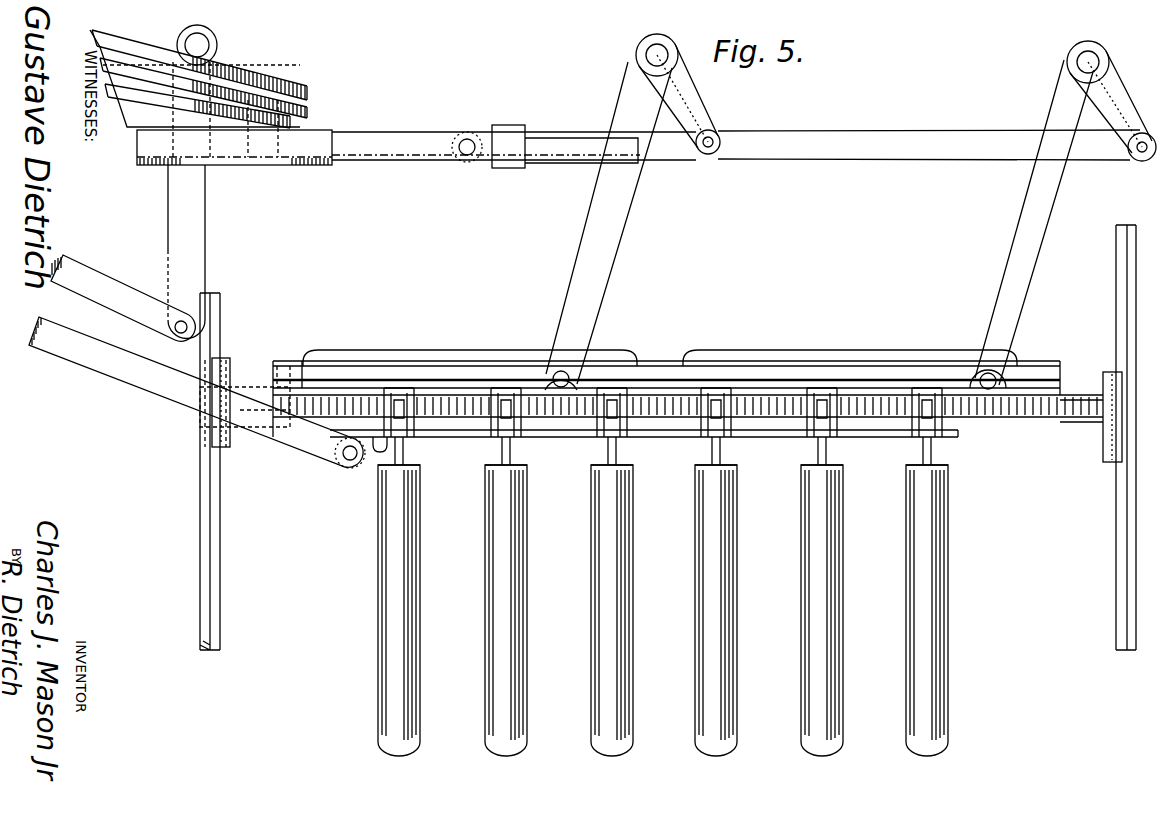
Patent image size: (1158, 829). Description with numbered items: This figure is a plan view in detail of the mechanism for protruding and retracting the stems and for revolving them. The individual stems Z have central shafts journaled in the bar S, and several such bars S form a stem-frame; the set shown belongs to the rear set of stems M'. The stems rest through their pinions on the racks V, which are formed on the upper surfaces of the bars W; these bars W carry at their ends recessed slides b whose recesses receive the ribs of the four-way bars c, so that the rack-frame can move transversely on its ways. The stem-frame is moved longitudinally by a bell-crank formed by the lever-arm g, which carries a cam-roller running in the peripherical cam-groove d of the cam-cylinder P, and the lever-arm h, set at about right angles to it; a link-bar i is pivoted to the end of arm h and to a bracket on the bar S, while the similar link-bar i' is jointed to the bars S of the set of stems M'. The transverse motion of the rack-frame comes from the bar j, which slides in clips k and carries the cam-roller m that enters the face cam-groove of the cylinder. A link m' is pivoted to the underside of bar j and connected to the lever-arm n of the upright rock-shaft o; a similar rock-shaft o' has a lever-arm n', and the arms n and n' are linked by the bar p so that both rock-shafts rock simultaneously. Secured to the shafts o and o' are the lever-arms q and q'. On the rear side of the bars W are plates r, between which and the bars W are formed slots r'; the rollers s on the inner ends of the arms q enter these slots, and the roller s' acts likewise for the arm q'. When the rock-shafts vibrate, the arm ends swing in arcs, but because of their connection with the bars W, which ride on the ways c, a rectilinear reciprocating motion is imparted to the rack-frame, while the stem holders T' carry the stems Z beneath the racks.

The lever-arm g is at (198, 65).
The cam-cylinder P is at (203, 82).
The peripherical cam-groove d is at (302, 102).
The cam-roller m is at (217, 113).
The clips k is at (331, 159).
The bar j is at (514, 147).
The upright rock-shaft o is at (661, 47).
The lever-arm n is at (678, 96).
The link m' is at (688, 142).
The bar p is at (929, 145).
The rock-shaft o' is at (1092, 53).
The lever-arm n' is at (1113, 106).
The lever-arm q is at (609, 223).
The lever-arm q' is at (1034, 222).
The lever-arm h is at (186, 252).
The link-bar i is at (123, 298).
The link-bar i' is at (196, 392).
The four-way bars c is at (1116, 311).
The recessed slides b is at (667, 404).
The bars W is at (282, 414).
The plates or bars r is at (660, 355).
The slots r' is at (666, 406).
The rollers s is at (568, 379).
The second link pin s' is at (988, 379).
The bar S is at (688, 430).
The stem holder T' is at (663, 427).
The racks V is at (1078, 424).
The stems Z is at (671, 610).
The rear set of stems M' is at (581, 573).